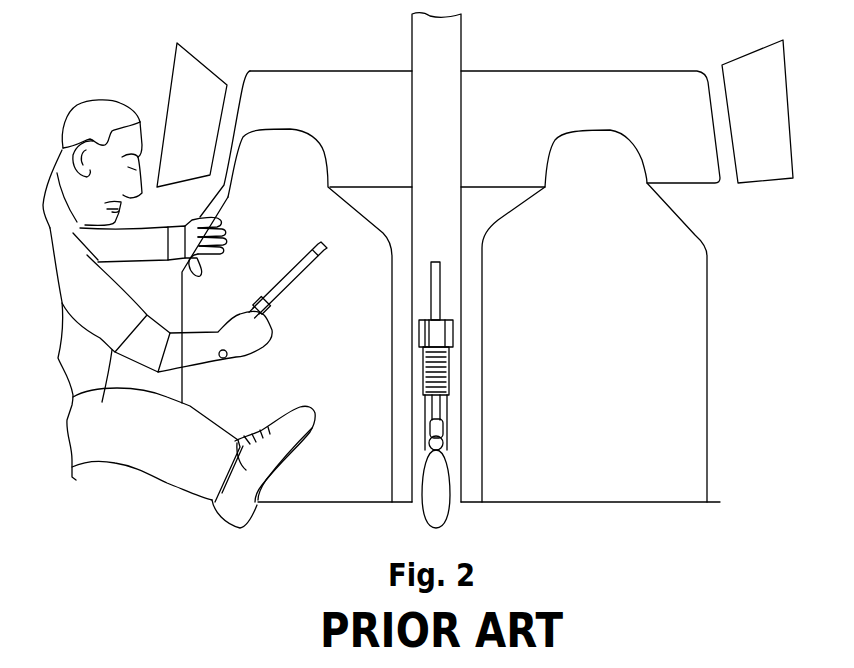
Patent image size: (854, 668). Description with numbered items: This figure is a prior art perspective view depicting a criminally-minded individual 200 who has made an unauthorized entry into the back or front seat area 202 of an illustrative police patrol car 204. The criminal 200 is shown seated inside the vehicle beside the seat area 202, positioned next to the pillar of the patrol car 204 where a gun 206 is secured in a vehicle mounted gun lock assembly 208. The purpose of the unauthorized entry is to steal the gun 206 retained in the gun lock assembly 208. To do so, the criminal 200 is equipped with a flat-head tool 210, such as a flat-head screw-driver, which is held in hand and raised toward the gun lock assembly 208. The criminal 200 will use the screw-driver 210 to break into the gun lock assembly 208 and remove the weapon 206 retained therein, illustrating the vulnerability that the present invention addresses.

The criminally-minded individual 200 is at (129, 94).
The seat area 202 is at (603, 420).
The police patrol car 204 is at (542, 48).
The gun 206 is at (441, 283).
The gun lock assembly 208 is at (453, 330).
The flat-head tool 210 is at (296, 282).